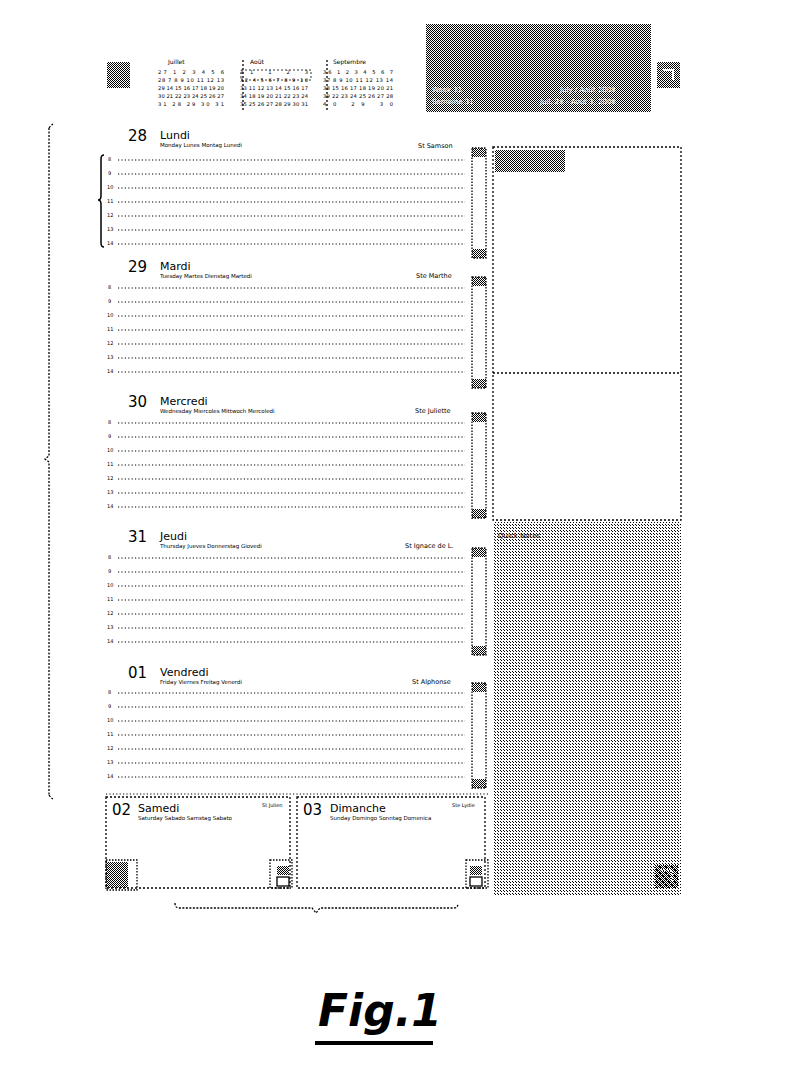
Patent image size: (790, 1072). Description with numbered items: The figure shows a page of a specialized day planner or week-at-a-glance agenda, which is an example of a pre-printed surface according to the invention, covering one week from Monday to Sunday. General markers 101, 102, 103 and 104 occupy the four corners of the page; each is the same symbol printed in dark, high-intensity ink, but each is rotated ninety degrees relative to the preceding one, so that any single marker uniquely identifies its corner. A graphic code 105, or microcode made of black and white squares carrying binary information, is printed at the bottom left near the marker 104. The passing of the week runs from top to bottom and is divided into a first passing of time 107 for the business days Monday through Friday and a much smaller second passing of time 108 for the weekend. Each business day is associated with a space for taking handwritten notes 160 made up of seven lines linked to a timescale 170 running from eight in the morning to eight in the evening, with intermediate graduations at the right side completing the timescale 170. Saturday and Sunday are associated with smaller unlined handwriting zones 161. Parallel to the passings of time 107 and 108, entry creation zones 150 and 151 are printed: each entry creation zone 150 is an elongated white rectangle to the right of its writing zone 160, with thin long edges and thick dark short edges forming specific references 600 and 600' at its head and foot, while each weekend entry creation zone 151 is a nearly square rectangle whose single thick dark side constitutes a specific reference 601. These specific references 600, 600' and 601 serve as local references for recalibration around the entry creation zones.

The general marker 101 is at (106, 74).
The general marker 102 is at (682, 74).
The general marker 103 is at (680, 876).
The general marker 104 is at (105, 875).
The graphic code 105 is at (113, 905).
The first passing of time 107 is at (30, 461).
The second passing of time 108 is at (316, 922).
The entry creation zone 150 is at (486, 200).
The entry creation zone 151 is at (292, 881).
The space for taking handwritten notes 160 is at (300, 196).
The unlined handwriting zone 161 is at (247, 870).
The timescale 170 is at (82, 201).
The specific reference 600 is at (511, 413).
The specific reference 600' is at (513, 524).
The specific reference 601 is at (290, 871).